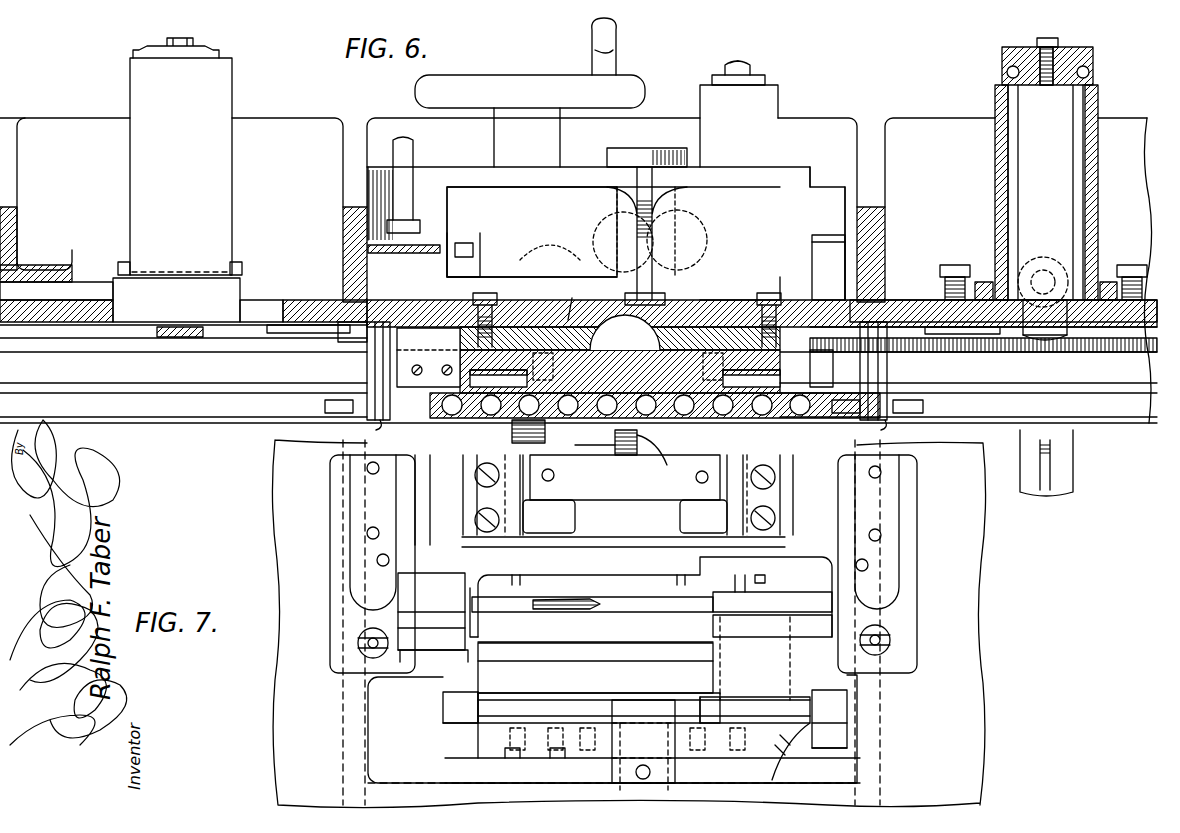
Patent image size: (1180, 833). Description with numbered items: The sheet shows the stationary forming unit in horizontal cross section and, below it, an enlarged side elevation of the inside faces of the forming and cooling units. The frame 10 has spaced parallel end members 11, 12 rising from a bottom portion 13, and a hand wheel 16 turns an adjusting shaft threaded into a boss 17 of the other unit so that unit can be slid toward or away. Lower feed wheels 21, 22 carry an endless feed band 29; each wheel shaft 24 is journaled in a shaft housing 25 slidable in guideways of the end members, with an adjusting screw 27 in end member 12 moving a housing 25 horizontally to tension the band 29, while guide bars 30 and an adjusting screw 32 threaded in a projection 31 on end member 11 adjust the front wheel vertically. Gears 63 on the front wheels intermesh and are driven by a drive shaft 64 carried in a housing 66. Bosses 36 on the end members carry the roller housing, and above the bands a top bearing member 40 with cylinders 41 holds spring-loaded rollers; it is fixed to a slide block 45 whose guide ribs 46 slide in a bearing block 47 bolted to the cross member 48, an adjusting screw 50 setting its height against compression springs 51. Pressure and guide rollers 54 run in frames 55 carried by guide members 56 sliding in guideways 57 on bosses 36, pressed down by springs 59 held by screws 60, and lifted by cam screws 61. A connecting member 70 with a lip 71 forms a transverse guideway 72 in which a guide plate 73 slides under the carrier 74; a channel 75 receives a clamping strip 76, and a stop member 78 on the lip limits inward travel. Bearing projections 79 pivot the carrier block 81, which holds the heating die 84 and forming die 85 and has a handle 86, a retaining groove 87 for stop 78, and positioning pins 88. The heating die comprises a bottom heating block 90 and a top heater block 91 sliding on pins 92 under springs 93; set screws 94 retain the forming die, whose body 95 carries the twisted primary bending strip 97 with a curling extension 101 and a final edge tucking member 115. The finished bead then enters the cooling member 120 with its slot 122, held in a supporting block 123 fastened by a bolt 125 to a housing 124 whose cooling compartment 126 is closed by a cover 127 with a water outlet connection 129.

In FIG. 6, the frame 10 is at (295, 112).
In FIG. 7, the frame 10 is at (996, 639).
In FIG. 6, the end member 11 is at (887, 137).
In FIG. 7, the end member 11 is at (975, 578).
In FIG. 6, the end member 12 is at (23, 172).
In FIG. 7, the end member 12 is at (283, 524).
In FIG. 6, the bottom portion 13 is at (788, 123).
In FIG. 6, the hand wheel 16 is at (480, 80).
In FIG. 6, the boss 17 is at (510, 140).
In FIG. 6, the wheel 21 is at (1110, 420).
In FIG. 6, the wheel 22 is at (185, 418).
In FIG. 6, the shaft 24 is at (1065, 122).
In FIG. 6, the shaft housing 25 is at (215, 95).
In FIG. 6, the adjusting screw 27 is at (30, 292).
In FIG. 6, the endless feed band 29 is at (135, 405).
In FIG. 6, the guide bar 30 is at (948, 275).
In FIG. 6, the projection 31 is at (1046, 270).
In FIG. 6, the adjusting screw 32 is at (1030, 258).
In FIG. 6, the boss 36 is at (320, 335).
In FIG. 7, the boss 36 is at (332, 568).
In FIG. 6, the top bearing member 40 is at (740, 413).
In FIG. 6, the cylinder 41 is at (690, 415).
In FIG. 6, the slide block 45 is at (700, 310).
In FIG. 7, the slide block 45 is at (608, 490).
In FIG. 6, the guide rib 46 is at (505, 305).
In FIG. 6, the bearing block 47 is at (535, 305).
In FIG. 6, the cross member 48 is at (682, 290).
In FIG. 7, the cross member 48 is at (604, 500).
In FIG. 6, the adjusting screw 50 is at (598, 446).
In FIG. 6, the compression spring 51 is at (579, 301).
In FIG. 7, the compression spring 51 is at (548, 543).
In FIG. 6, the pressure and guide roller 54 is at (340, 398).
In FIG. 6, the frame 55 is at (322, 408).
In FIG. 6, the guide member 56 is at (912, 364).
In FIG. 6, the guideway 57 is at (340, 312).
In FIG. 6, the spring 59 is at (290, 335).
In FIG. 6, the screw 60 is at (270, 336).
In FIG. 6, the cam screw 61 is at (843, 369).
In FIG. 6, the gear 63 is at (1095, 352).
In FIG. 6, the drive shaft 64 is at (748, 68).
In FIG. 6, the housing 66 is at (760, 100).
In FIG. 6, the connecting member 70 is at (826, 167).
In FIG. 7, the connecting member 70 is at (388, 760).
In FIG. 7, the lip 71 is at (492, 770).
In FIG. 6, the guideway 72 is at (811, 170).
In FIG. 7, the guideway 72 is at (487, 754).
In FIG. 7, the guide plate 73 is at (558, 758).
In FIG. 6, the carrier 74 is at (555, 195).
In FIG. 7, the carrier 74 is at (500, 728).
In FIG. 6, the channel 75 is at (693, 231).
In FIG. 7, the channel 75 is at (665, 727).
In FIG. 6, the clamping strip 76 is at (680, 205).
In FIG. 7, the clamping strip 76 is at (612, 722).
In FIG. 7, the stop member 78 is at (625, 712).
In FIG. 6, the bearing projection 79 is at (822, 237).
In FIG. 7, the bearing projection 79 is at (838, 712).
In FIG. 6, the carrier block 81 is at (735, 285).
In FIG. 7, the carrier block 81 is at (595, 668).
In FIG. 6, the heating die 84 is at (821, 368).
In FIG. 7, the heating die 84 is at (770, 634).
In FIG. 7, the forming die 85 is at (582, 633).
In FIG. 6, the handle 86 is at (628, 160).
In FIG. 7, the retaining groove 87 is at (575, 697).
In FIG. 7, the positioning pin 88 is at (545, 712).
In FIG. 7, the bottom heating block 90 is at (818, 637).
In FIG. 7, the top heater block 91 is at (733, 615).
In FIG. 7, the pin 92 is at (722, 585).
In FIG. 7, the spring 93 is at (760, 576).
In FIG. 7, the set screw 94 is at (520, 573).
In FIG. 7, the body 95 is at (653, 630).
In FIG. 7, the primary bending strip 97 is at (560, 606).
In FIG. 7, the extension 101 is at (498, 605).
In FIG. 7, the final edge tucking member 115 is at (478, 642).
In FIG. 7, the cooling member 120 is at (418, 598).
In FIG. 7, the slot 122 is at (403, 650).
In FIG. 6, the supporting block 123 is at (400, 413).
In FIG. 7, the supporting block 123 is at (427, 648).
In FIG. 6, the housing 124 is at (455, 262).
In FIG. 7, the housing 124 is at (455, 667).
In FIG. 6, the bolt 125 is at (450, 265).
In FIG. 6, the cooling compartment 126 is at (355, 265).
In FIG. 6, the cover 127 is at (410, 225).
In FIG. 6, the water outlet connection 129 is at (405, 160).